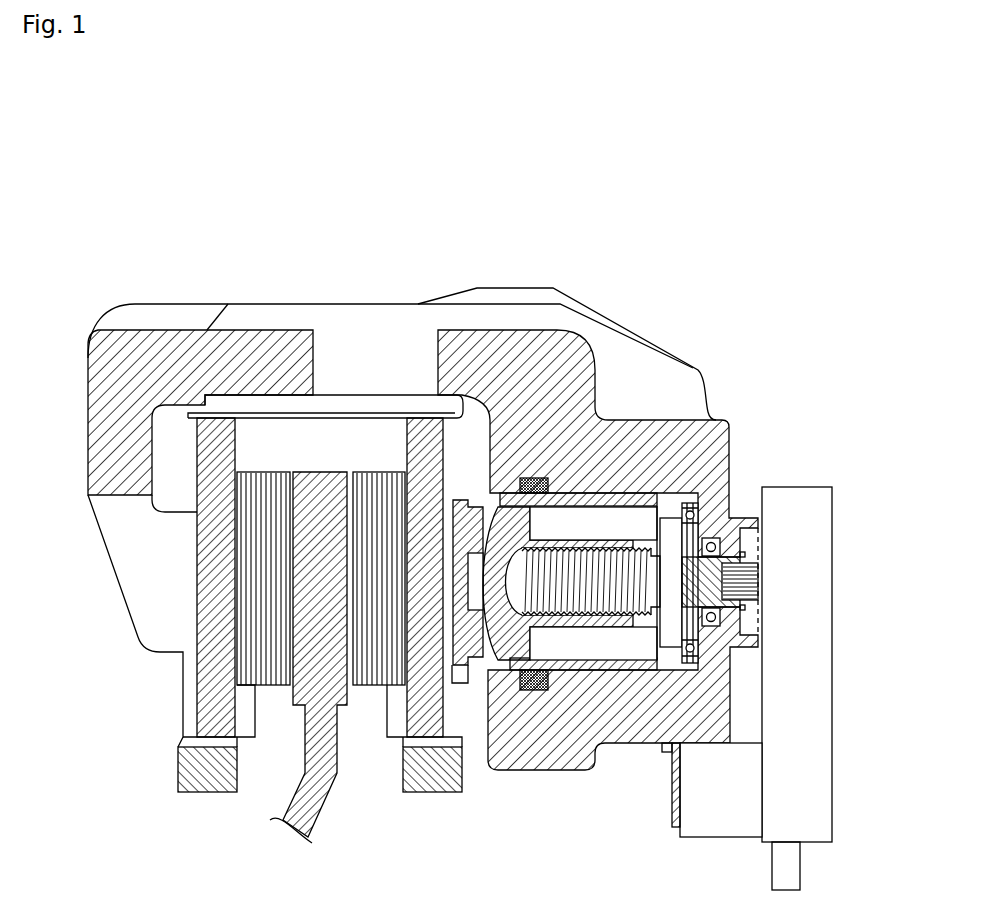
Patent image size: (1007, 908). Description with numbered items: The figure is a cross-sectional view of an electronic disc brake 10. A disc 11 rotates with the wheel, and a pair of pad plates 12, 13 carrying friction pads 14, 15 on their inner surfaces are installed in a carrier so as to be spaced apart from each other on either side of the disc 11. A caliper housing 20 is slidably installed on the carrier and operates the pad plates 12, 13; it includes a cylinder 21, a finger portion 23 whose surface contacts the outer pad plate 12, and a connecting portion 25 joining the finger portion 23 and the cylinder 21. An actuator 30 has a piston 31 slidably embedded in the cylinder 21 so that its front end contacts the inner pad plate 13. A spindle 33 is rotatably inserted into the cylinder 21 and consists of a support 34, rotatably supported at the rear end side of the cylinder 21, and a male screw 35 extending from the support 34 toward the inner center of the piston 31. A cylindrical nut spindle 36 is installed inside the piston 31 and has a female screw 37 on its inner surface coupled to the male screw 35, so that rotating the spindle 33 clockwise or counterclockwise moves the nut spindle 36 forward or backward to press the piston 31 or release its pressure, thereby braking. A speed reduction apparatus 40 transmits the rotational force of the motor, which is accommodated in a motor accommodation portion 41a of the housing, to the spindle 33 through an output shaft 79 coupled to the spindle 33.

The electronic disc brake 10 is at (536, 106).
The disc 11 is at (343, 690).
The outer pad plate 12 is at (202, 693).
The inner pad plate 13 is at (425, 718).
The friction pad 14 is at (272, 676).
The friction pad 15 is at (378, 676).
The caliper housing 20 is at (510, 286).
The cylinder 21 is at (583, 407).
The finger portion 23 is at (130, 571).
The connecting portion 25 is at (258, 340).
The actuator 30 is at (625, 445).
The piston 31 is at (627, 500).
The spindle 33 is at (594, 702).
The support 34 is at (658, 620).
The male screw 35 is at (606, 617).
The nut spindle 36 is at (515, 638).
The female screw 37 is at (482, 613).
The speed reduction apparatus 40 is at (842, 478).
The motor accommodation portion 41a is at (723, 820).
The output shaft 79 is at (738, 580).